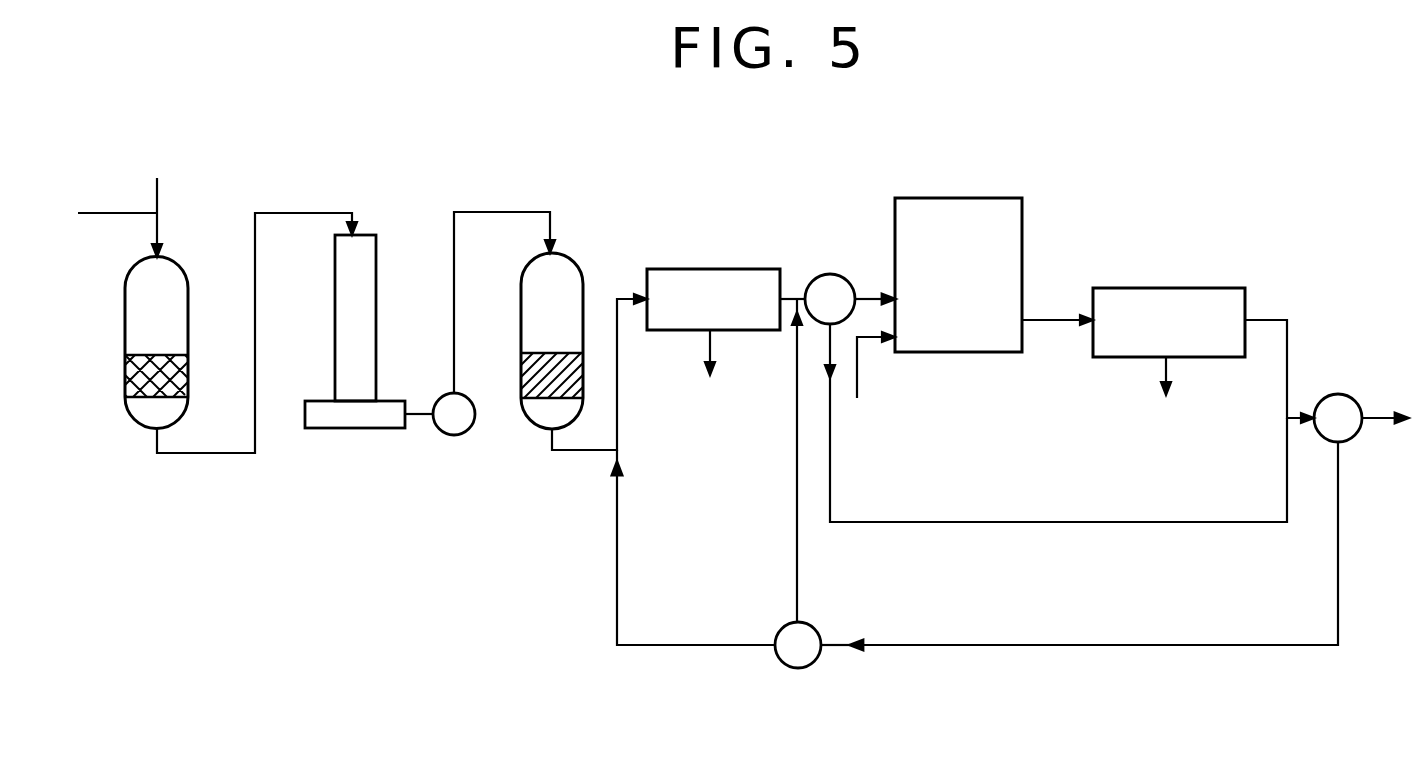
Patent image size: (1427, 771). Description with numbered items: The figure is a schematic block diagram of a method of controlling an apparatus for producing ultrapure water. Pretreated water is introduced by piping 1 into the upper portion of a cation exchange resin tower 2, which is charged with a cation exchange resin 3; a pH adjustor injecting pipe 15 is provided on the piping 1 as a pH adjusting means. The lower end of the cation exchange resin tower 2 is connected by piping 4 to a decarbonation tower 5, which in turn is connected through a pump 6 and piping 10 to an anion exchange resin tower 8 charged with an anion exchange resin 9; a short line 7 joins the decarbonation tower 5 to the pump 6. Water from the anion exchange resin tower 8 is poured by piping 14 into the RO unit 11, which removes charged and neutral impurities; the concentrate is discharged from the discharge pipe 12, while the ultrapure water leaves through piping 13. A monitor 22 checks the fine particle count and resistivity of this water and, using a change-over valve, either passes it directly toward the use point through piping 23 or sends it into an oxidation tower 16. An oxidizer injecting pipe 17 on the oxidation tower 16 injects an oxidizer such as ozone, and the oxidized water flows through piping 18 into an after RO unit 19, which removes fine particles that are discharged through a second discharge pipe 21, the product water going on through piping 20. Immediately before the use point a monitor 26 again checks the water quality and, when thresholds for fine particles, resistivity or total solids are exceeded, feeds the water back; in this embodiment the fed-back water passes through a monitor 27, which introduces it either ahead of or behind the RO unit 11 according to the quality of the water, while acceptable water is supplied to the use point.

The piping 1 is at (97, 213).
The cation exchange resin tower 2 is at (125, 333).
The cation exchange resin 3 is at (125, 380).
The piping 4 is at (193, 453).
The decarbonation tower 5 is at (355, 428).
The pump 6 is at (455, 435).
The pipe 7 is at (420, 414).
The anion exchange resin tower 8 is at (583, 275).
The anion exchange resin 9 is at (521, 383).
The piping 10 is at (500, 212).
The reverse osmosis membrane unit 11 is at (707, 269).
The discharge pipe 12 is at (712, 345).
The piping 13 is at (797, 290).
The piping 14 is at (570, 450).
The pH adjustor injecting pipe 15 is at (156, 199).
The oxidation tower 16 is at (950, 198).
The oxidizer injecting pipe 17 is at (857, 372).
The piping 18 is at (1052, 320).
The after RO unit 19 is at (1160, 288).
The piping 20 is at (1265, 320).
The second discharge pipe 21 is at (1170, 370).
The monitor 22 is at (833, 275).
The piping 23 is at (1048, 522).
The monitor 26 is at (1338, 394).
The monitor 27 is at (797, 668).